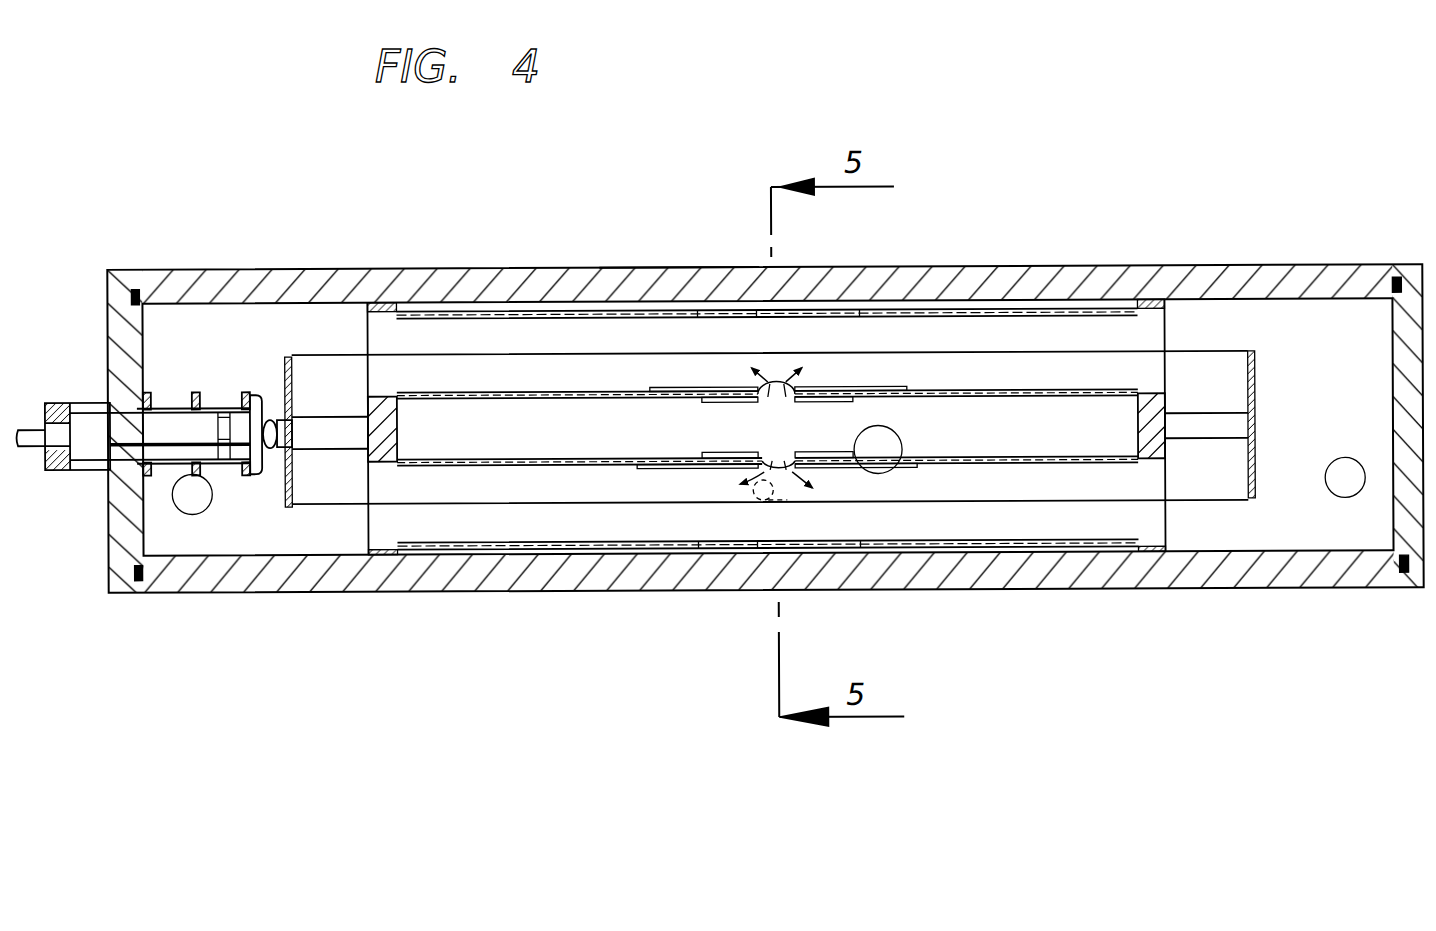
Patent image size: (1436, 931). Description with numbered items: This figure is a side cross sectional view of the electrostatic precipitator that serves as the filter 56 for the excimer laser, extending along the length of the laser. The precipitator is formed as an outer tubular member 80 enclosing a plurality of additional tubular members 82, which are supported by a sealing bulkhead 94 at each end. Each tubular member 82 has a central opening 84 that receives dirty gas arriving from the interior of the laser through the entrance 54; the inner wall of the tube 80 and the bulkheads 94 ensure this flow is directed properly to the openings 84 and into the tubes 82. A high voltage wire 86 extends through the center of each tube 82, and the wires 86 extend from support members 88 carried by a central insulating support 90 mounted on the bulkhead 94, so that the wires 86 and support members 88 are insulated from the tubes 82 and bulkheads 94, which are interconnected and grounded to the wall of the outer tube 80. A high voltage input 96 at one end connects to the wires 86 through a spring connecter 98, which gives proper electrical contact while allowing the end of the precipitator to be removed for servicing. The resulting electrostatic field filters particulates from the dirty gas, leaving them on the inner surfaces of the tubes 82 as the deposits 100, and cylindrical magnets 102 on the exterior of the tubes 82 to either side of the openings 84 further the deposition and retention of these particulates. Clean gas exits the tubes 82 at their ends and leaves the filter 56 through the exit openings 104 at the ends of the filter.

The entrance 54 is at (748, 494).
The filter 56 is at (465, 268).
The tubular member 80 is at (680, 267).
The tubular members 82 is at (578, 312).
The opening 84 is at (774, 386).
The high voltage wire 86 is at (578, 353).
The support members 88 is at (285, 364).
The central insulating support 90 is at (318, 427).
The sealing bulkhead 94 is at (368, 305).
The high voltage input 96 is at (60, 400).
The spring connecter 98 is at (266, 470).
The deposits 100 is at (720, 396).
The cylindrical magnets 102 is at (828, 395).
The exit openings 104 is at (200, 490).